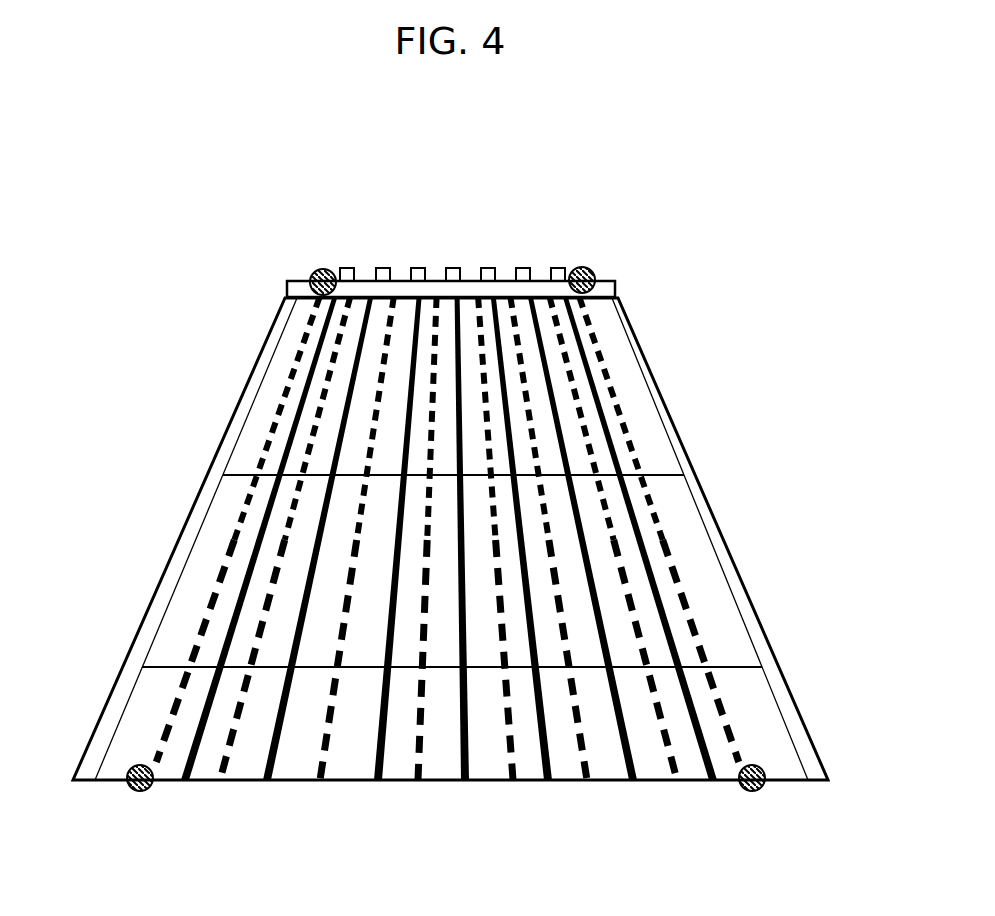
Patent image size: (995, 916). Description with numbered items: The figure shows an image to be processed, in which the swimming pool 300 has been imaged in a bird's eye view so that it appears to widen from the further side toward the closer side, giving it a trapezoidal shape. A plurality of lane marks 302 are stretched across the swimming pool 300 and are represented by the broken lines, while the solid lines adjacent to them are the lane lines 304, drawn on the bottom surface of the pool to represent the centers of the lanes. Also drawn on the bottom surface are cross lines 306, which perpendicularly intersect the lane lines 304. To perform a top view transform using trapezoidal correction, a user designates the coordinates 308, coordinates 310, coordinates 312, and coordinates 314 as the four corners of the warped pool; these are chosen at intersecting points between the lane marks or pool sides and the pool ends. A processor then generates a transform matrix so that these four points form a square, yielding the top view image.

The swimming pool 300 is at (672, 350).
The lane marks 302 is at (157, 738).
The lane lines 304 is at (187, 783).
The cross lines 306 is at (683, 475).
The coordinates 308 is at (318, 270).
The coordinates 310 is at (590, 268).
The coordinates 312 is at (130, 764).
The coordinates 314 is at (758, 764).